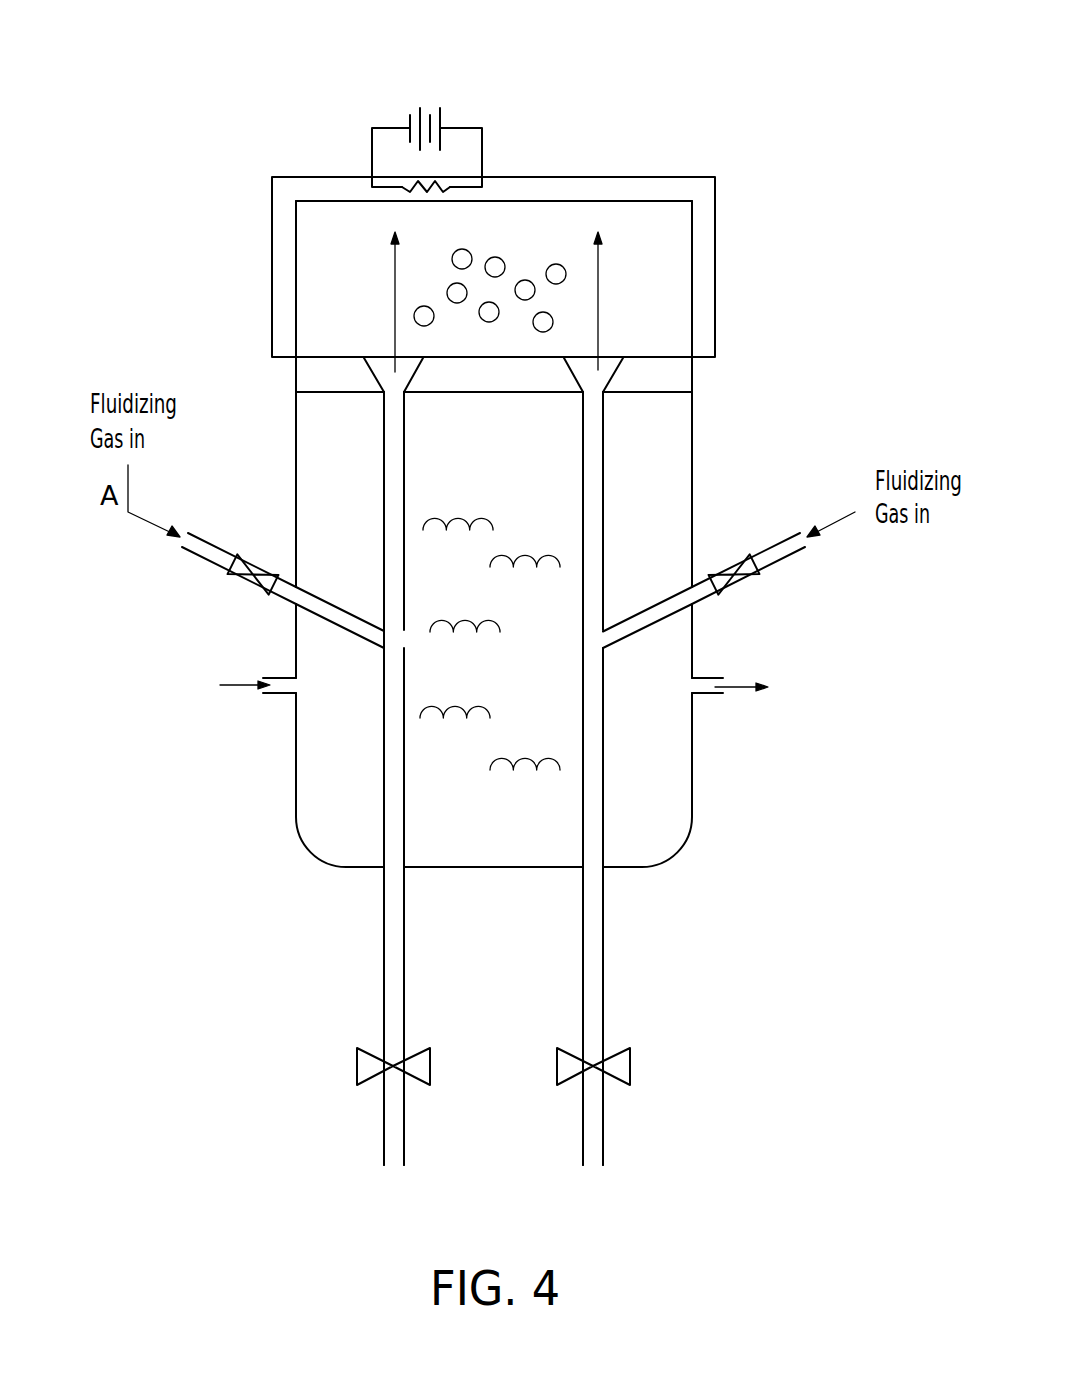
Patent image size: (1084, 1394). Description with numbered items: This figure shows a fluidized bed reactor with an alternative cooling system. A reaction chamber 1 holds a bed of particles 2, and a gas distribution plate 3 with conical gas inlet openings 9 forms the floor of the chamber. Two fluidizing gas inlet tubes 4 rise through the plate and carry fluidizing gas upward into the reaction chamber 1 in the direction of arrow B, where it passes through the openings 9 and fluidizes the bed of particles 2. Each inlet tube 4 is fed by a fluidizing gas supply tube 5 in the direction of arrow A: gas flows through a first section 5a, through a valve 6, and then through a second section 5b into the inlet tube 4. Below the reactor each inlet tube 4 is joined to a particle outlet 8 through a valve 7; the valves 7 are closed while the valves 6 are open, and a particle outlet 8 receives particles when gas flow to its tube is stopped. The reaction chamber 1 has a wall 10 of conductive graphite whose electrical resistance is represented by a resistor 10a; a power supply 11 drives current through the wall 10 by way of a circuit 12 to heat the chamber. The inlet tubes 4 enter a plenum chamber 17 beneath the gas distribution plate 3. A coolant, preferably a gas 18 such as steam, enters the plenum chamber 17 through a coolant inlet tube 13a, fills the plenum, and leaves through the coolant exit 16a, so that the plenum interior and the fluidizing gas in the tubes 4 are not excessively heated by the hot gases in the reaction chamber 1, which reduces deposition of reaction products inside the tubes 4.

The reaction chamber 1 is at (692, 232).
The bed of particles 2 is at (466, 250).
The gas distribution plate 3 is at (692, 375).
The fluidizing gas inlet tube 4 is at (583, 917).
The fluidizing gas supply tube 5 is at (423, 590).
The first section of fluidizing gas supply tube 5a is at (193, 558).
The second section of fluidizing gas supply tube 5b is at (280, 600).
The valve 6 is at (252, 557).
The valve 7 is at (557, 1062).
The particle outlet 8 is at (583, 1137).
The gas inlet opening 9 is at (605, 367).
The wall 10 is at (273, 275).
The resistor 10a is at (417, 180).
The power supply 11 is at (428, 103).
The circuit 12 is at (482, 145).
The coolant inlet tube 13a is at (278, 695).
The coolant outlet 16a is at (713, 695).
The plenum chamber 17 is at (692, 530).
The gas 18 is at (490, 585).